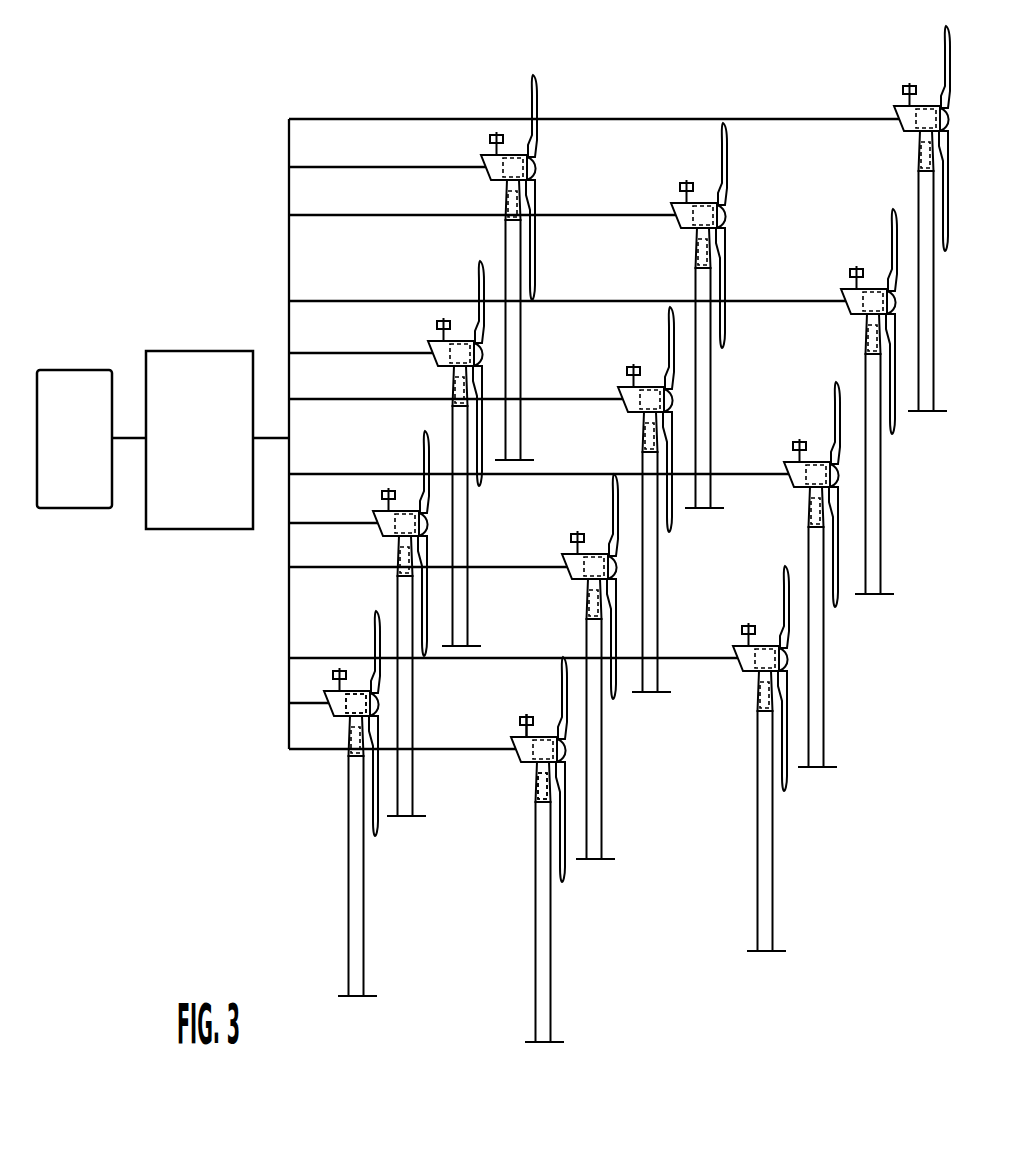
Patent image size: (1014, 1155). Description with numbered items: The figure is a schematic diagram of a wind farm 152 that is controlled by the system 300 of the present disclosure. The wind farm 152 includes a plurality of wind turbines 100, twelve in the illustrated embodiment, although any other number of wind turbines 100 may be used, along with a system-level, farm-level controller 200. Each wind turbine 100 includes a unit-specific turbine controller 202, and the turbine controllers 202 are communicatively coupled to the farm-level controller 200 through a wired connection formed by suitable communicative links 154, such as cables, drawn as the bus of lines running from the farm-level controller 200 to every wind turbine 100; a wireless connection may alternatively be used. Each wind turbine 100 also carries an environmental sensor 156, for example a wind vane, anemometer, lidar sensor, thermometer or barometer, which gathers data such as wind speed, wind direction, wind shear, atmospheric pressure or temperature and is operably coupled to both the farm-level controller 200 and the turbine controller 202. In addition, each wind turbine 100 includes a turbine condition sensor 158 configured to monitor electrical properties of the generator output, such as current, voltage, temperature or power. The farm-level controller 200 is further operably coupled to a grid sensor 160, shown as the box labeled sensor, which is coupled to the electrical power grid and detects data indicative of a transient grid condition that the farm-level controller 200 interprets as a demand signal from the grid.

The system for controlling the electrical system 300 is at (100, 96).
The wind turbine 100 is at (596, 534).
The wind farm 152 is at (195, 255).
The communicative links 154 is at (395, 214).
The environmental sensor 156 is at (527, 713).
The turbine condition sensor 158 is at (537, 781).
The grid sensor 160 is at (80, 370).
The farm-level controller 200 is at (238, 512).
The turbine controller 202 is at (353, 693).